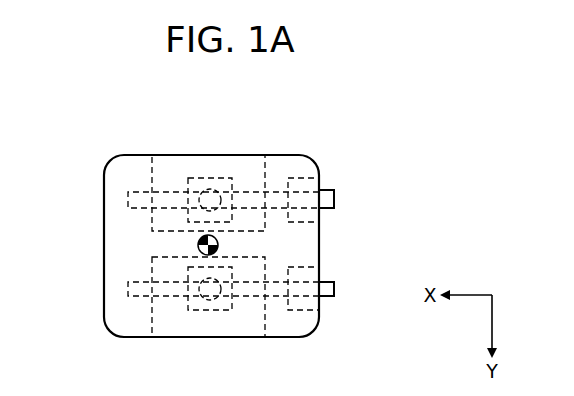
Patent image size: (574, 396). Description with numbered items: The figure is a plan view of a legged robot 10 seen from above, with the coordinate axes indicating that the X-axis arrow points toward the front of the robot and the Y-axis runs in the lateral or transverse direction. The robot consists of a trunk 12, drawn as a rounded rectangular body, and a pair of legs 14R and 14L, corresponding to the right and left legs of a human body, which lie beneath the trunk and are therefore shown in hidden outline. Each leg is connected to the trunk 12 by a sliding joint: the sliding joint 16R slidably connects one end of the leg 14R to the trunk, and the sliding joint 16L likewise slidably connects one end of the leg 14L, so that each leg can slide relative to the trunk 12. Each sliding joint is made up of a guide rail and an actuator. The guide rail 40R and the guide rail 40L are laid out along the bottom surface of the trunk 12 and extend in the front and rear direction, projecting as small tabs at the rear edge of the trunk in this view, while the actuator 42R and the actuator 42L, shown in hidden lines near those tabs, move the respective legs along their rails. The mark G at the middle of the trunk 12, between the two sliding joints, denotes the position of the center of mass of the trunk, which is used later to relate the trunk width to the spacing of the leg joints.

The legged robot 10 is at (306, 115).
The trunk 12 is at (118, 218).
The leg 14R is at (212, 172).
The leg 14L is at (204, 316).
The sliding joint 16R is at (333, 185).
The sliding joint 16L is at (336, 275).
The guide rail 40R is at (336, 200).
The guide rail 40L is at (336, 292).
The actuator 42R is at (306, 222).
The actuator 42L is at (306, 310).
The position of the center of mass G is at (198, 245).